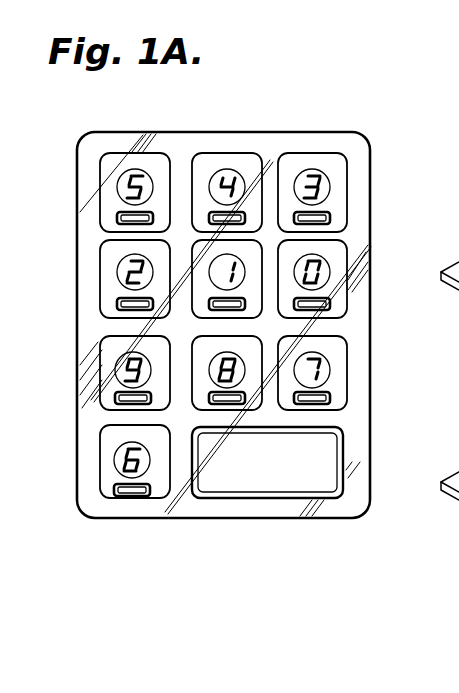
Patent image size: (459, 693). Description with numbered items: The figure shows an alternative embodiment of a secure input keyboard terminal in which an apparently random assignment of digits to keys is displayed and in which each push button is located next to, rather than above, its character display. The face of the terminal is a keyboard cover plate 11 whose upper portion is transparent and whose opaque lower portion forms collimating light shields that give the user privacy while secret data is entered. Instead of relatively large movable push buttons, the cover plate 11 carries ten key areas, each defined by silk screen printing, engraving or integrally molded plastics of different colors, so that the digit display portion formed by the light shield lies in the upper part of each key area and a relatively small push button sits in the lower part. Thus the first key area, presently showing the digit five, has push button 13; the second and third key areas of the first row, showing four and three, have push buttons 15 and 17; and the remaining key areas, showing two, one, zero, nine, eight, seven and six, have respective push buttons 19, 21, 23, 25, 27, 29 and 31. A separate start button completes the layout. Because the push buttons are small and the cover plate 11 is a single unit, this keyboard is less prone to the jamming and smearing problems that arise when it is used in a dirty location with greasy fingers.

The keyboard cover plate 11 is at (183, 328).
The push button 13 is at (117, 218).
The push button 15 is at (208, 218).
The push button 17 is at (330, 218).
The push button 19 is at (117, 305).
The push button 21 is at (235, 312).
The push button 23 is at (330, 305).
The push button 25 is at (118, 398).
The push button 27 is at (237, 405).
The push button 29 is at (330, 398).
The push button 31 is at (125, 492).